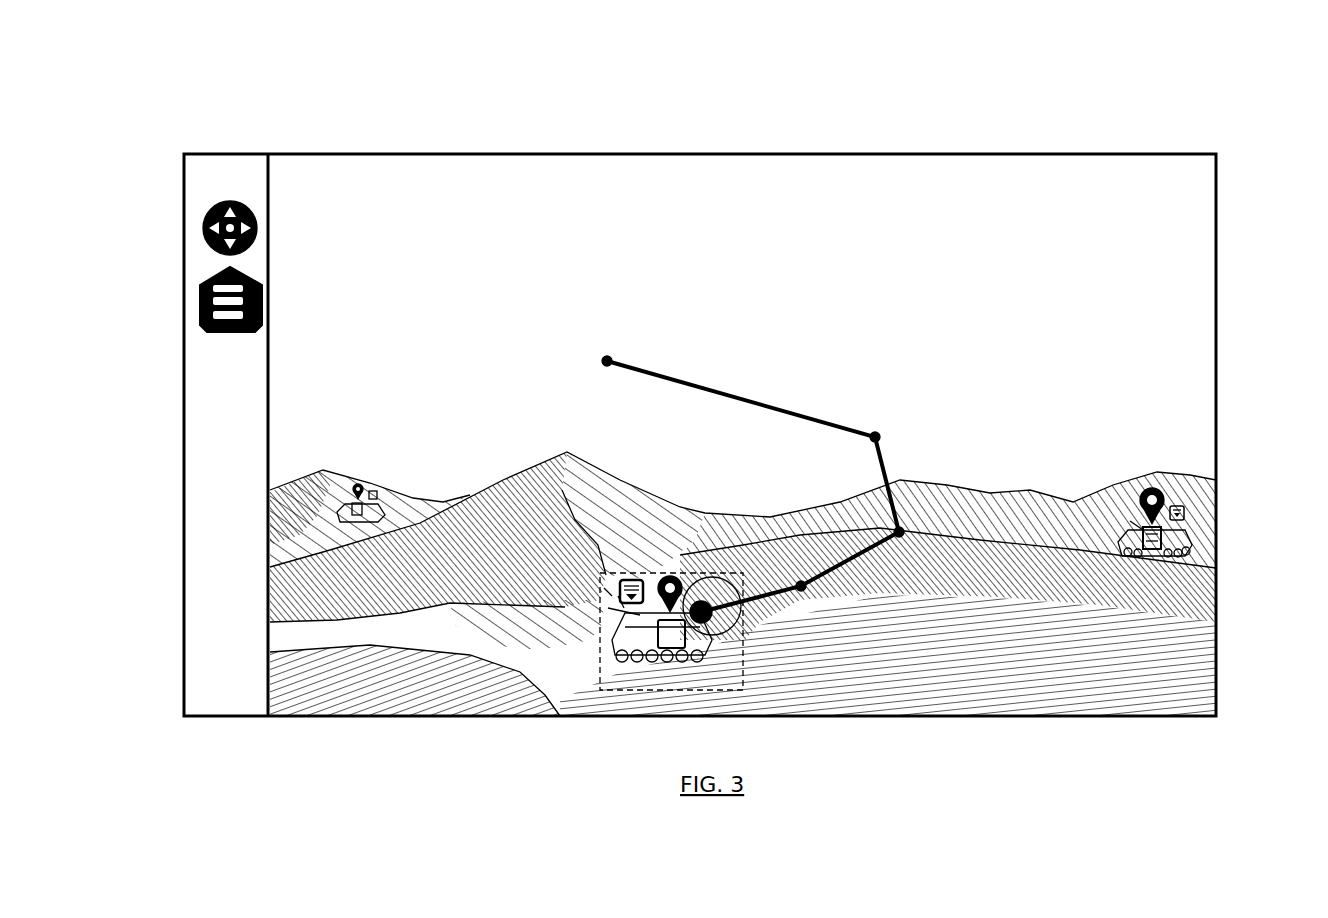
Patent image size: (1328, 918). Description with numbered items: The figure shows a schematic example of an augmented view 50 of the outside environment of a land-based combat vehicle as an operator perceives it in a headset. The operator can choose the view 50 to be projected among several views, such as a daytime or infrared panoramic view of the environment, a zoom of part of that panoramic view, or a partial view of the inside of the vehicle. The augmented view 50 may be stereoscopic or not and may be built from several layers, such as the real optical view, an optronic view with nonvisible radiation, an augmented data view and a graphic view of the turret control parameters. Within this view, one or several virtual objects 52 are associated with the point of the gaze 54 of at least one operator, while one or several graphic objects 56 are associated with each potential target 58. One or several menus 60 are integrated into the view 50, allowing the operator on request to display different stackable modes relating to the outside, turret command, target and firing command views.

The augmented view 50 is at (553, 121).
The virtual object 52 is at (701, 605).
The point of the gaze 54 is at (740, 632).
The graphic object 56 is at (1165, 490).
The potential target 58 is at (1185, 540).
The menu 60 is at (215, 313).